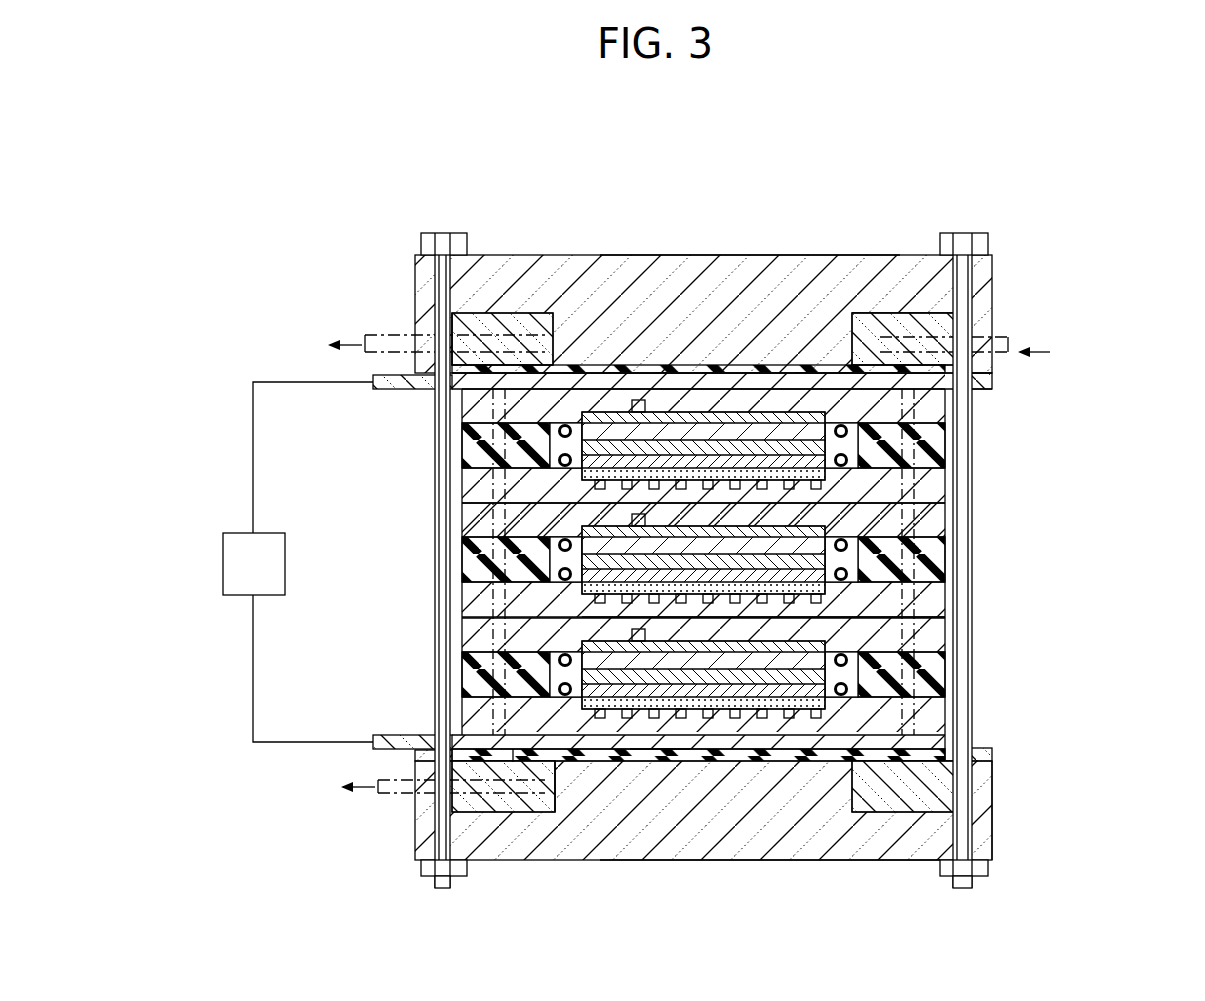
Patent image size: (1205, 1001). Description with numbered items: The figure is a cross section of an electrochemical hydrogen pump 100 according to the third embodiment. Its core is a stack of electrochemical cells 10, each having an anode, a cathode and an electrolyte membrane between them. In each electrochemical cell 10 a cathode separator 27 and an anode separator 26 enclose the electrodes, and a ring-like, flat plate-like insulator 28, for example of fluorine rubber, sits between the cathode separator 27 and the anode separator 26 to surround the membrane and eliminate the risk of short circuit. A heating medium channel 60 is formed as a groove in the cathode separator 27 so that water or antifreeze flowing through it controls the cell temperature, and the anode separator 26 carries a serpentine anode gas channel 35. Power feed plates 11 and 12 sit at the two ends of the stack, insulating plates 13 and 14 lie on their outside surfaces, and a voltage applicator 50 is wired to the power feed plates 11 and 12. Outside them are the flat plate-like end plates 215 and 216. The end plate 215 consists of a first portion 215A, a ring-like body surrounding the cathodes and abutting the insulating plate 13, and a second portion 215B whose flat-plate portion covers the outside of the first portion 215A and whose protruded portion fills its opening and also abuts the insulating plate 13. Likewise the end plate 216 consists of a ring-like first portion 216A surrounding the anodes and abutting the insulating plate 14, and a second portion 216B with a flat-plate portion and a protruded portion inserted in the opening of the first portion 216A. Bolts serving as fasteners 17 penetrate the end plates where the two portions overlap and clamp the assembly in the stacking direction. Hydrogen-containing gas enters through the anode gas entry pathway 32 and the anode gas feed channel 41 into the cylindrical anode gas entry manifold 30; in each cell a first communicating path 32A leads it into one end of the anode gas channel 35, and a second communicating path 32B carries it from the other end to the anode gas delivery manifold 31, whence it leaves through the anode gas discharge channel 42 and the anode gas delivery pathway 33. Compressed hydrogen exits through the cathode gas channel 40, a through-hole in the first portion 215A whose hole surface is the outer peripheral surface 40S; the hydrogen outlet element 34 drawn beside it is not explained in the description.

The electrochemical hydrogen pump 100 is at (529, 127).
The electrochemical cell 10 is at (633, 562).
The power feed plate 11 is at (406, 392).
The power feed plate 12 is at (406, 735).
The insulating plate 13 is at (992, 381).
The insulating plate 14 is at (992, 752).
The fastener 17 is at (425, 231).
The anode separator 26 is at (655, 611).
The cathode separator 27 is at (470, 523).
The insulator 28 is at (462, 570).
The anode gas entry manifold 30 is at (920, 790).
The anode gas delivery manifold 31 is at (513, 800).
The anode gas entry pathway 32 is at (1012, 341).
The first communicating path 32A is at (855, 790).
The second communicating path 32B is at (560, 790).
The anode gas delivery pathway 33 is at (398, 800).
The hydrogen outlet pipe 34 is at (400, 336).
The anode gas channel 35 is at (665, 760).
The cathode gas channel 40 is at (536, 313).
The outer peripheral surface of the cathode gas channel 40S is at (468, 350).
The anode gas feed channel 41 is at (920, 313).
The anode gas discharge channel 42 is at (478, 860).
The voltage applicator 50 is at (240, 580).
The heating medium channel 60 is at (770, 618).
The end plate 215 is at (797, 253).
The first portion 215A is at (876, 313).
The second portion 215B is at (724, 285).
The end plate 216 is at (757, 862).
The first portion 216A is at (992, 782).
The second portion 216B is at (716, 860).